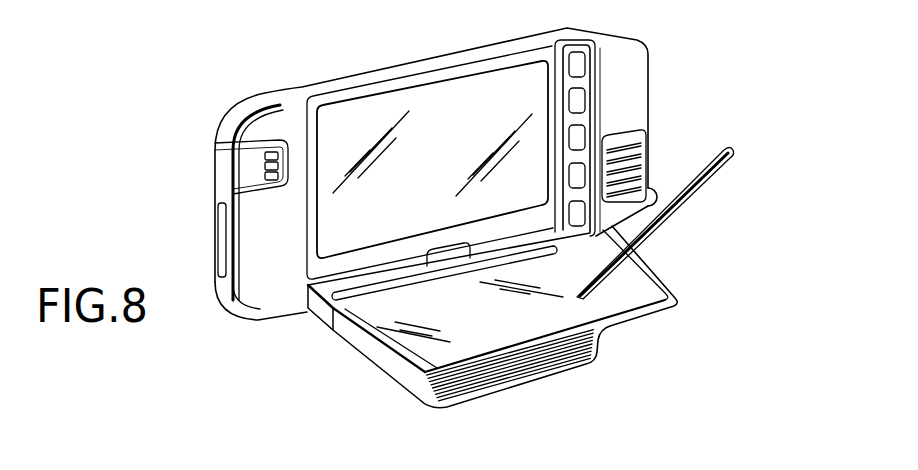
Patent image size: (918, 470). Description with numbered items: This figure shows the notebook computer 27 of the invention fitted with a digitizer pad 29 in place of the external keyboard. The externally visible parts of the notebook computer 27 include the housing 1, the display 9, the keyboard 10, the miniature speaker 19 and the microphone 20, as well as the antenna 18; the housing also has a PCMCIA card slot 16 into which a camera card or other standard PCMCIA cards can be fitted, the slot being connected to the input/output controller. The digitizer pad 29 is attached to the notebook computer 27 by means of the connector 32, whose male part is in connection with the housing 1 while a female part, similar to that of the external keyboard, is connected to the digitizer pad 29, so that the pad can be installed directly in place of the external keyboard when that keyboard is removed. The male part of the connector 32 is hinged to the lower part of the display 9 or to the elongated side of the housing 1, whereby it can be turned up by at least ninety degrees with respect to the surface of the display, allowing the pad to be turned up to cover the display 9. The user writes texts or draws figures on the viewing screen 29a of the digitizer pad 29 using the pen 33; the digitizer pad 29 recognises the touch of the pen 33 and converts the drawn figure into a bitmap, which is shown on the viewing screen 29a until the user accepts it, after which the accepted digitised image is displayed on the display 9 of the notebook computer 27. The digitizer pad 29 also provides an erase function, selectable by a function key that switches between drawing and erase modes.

The housing 1 is at (252, 110).
The display 9 is at (384, 99).
The keyboard 10 is at (605, 88).
The PCMCIA card slot 16 is at (223, 231).
The antenna 18 is at (659, 198).
The miniature speaker 19 is at (221, 173).
The microphone 20 is at (646, 151).
The notebook computer 27 is at (701, 127).
The digitizer pad 29 is at (668, 296).
The viewing screen 29a is at (631, 289).
The connector 32 is at (318, 330).
The pen 33 is at (713, 173).